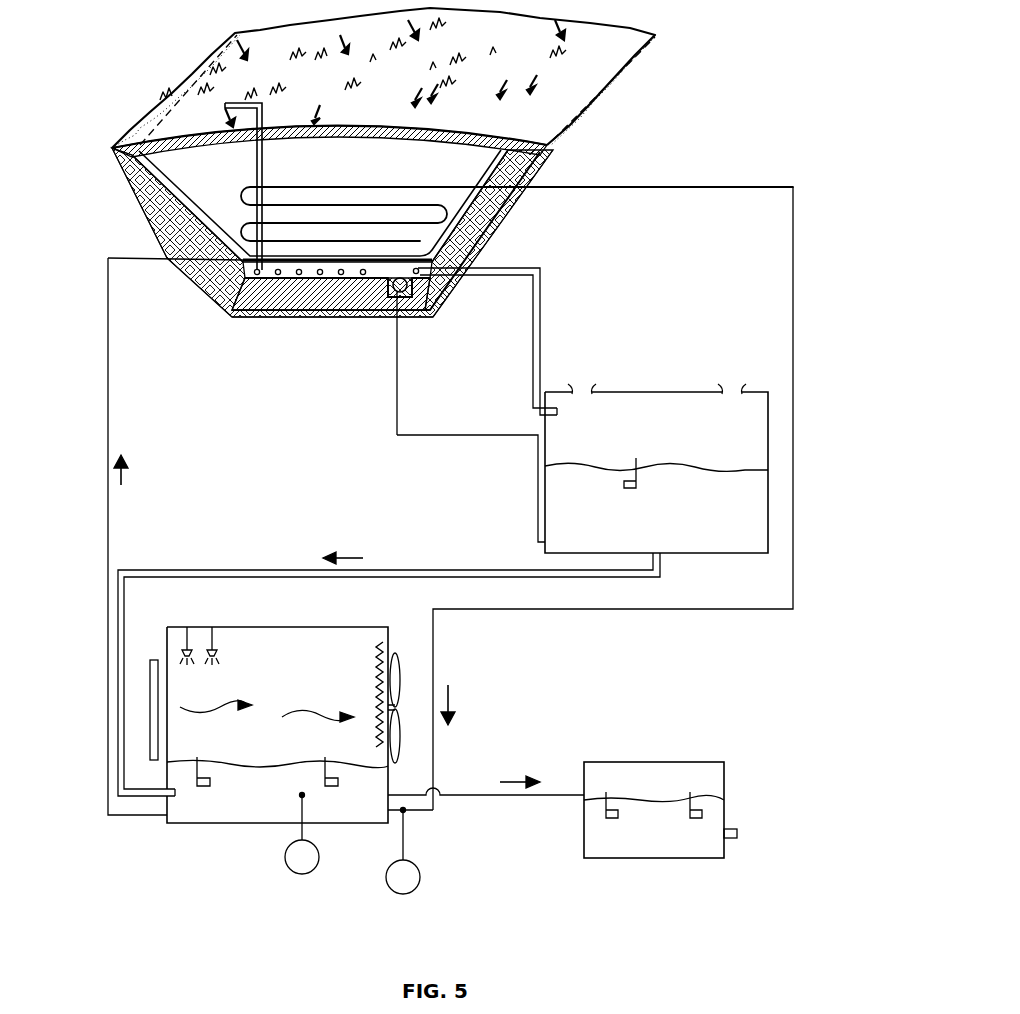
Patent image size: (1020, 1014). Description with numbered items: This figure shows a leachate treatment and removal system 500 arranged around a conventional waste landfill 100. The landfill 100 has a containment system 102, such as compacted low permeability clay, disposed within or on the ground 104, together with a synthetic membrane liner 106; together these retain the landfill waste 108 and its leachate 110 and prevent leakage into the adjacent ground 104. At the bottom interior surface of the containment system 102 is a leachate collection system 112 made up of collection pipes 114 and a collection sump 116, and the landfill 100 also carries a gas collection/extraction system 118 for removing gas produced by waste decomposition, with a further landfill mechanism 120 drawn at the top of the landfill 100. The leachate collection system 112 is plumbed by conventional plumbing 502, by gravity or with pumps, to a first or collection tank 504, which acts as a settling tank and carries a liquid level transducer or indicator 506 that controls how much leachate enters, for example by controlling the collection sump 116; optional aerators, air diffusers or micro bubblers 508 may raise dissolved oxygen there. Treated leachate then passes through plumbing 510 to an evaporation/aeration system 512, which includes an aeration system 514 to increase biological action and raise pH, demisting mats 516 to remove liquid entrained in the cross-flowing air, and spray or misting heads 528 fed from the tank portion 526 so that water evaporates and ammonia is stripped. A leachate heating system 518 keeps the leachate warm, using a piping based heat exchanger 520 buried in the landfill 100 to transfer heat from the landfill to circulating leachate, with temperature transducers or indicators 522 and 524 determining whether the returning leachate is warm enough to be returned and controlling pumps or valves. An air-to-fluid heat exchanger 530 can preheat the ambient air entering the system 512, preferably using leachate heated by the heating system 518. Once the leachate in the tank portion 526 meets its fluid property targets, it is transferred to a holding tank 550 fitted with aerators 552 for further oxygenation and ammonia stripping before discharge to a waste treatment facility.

The waste landfill 100 is at (483, 113).
The containment system 102 is at (330, 298).
The ground 104 is at (185, 264).
The synthetic membrane liner 106 is at (290, 280).
The landfill waste 108 is at (335, 199).
The leachate 110 is at (380, 296).
The leachate collection system 112 is at (238, 268).
The collection pipes 114 is at (253, 285).
The collection sump 116 is at (406, 292).
The gas collection/extraction system 118 is at (255, 100).
The gas collection/extraction system 120 is at (371, 128).
The leachate treatment and removal system 500 is at (690, 146).
The plumbing 502 is at (543, 312).
The first or collection tank 504 is at (650, 390).
The liquid level transducer or indicator 506 is at (538, 488).
The aerators, air diffusers or micro bubblers 508 is at (638, 486).
The plumbing 510 is at (418, 570).
The evaporation/aeration system 512 is at (222, 835).
The aeration system 514 is at (208, 786).
The demisting mats 516 is at (376, 674).
The leachate heating system 518 is at (560, 180).
The piping based heat exchanger 520 is at (395, 187).
The temperature transducer or indicator 522 is at (302, 874).
The temperature transducer or indicator 524 is at (403, 894).
The tank portion 526 is at (183, 813).
The spray or misting heads 528 is at (189, 640).
The air-to-fluid heat exchanger 530 is at (154, 660).
The holding tank 550 is at (584, 840).
The aerators 552 is at (612, 818).